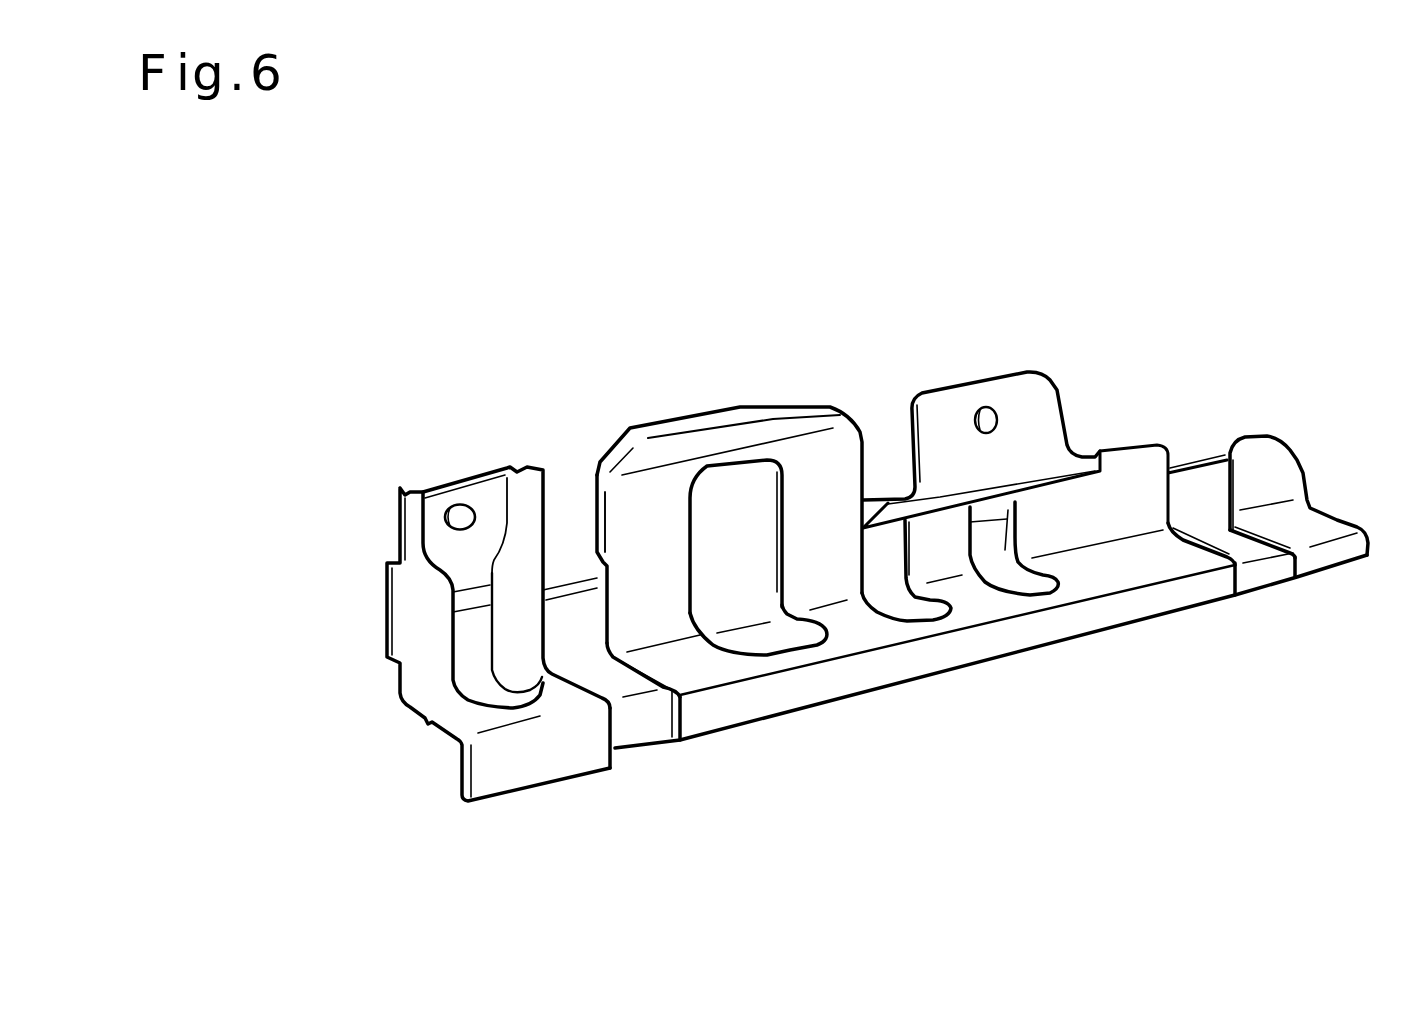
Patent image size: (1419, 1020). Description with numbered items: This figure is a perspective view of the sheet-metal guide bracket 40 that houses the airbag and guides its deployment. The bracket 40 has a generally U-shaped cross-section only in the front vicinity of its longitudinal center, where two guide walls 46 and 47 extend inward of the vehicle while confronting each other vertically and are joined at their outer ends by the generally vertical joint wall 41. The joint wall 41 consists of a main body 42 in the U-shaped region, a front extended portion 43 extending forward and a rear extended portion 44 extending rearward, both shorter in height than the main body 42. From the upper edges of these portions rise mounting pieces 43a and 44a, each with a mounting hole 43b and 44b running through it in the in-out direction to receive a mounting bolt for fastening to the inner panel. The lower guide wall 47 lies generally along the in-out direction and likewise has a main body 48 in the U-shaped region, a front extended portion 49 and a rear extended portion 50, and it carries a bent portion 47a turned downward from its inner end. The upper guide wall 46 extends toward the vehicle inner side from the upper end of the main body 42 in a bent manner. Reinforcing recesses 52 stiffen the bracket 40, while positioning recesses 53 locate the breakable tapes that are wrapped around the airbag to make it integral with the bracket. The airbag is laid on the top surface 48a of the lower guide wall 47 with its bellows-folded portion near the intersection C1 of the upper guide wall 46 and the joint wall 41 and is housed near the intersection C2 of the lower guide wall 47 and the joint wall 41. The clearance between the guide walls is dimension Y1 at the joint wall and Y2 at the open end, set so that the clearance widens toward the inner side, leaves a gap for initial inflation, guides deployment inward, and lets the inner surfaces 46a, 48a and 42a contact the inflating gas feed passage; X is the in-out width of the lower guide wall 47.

The guide bracket 40 is at (446, 326).
The joint wall 41 is at (848, 511).
The main body 42 is at (848, 511).
The inner surface 42a is at (648, 492).
The front extended portion 43 is at (468, 589).
The mounting piece 43a is at (486, 488).
The mounting hole 43b is at (456, 504).
The rear extended portion 44 is at (1018, 361).
The mounting piece 44a is at (1036, 400).
The mounting hole 44b is at (988, 407).
The upper guide wall 46 is at (687, 446).
The inner surface 46a is at (766, 437).
The lower guide wall 47 is at (987, 691).
The bent portion 47a is at (1148, 607).
The main body 48 is at (987, 691).
The top surface 48a is at (700, 665).
The front extended portion 49 is at (563, 697).
The rear extended portion 50 is at (1307, 530).
The reinforcing recesses 52 is at (775, 640).
The positioning recesses 53 is at (643, 728).
The intersection of the upper guide wall and the joint wall C1 is at (718, 446).
The intersection of the lower guide wall and the joint wall C2 is at (848, 630).
The width of the lower guide wall X is at (432, 747).
The clearance dimension at the joint wall Y1 is at (353, 544).
The clearance dimension at the open end Y2 is at (447, 747).